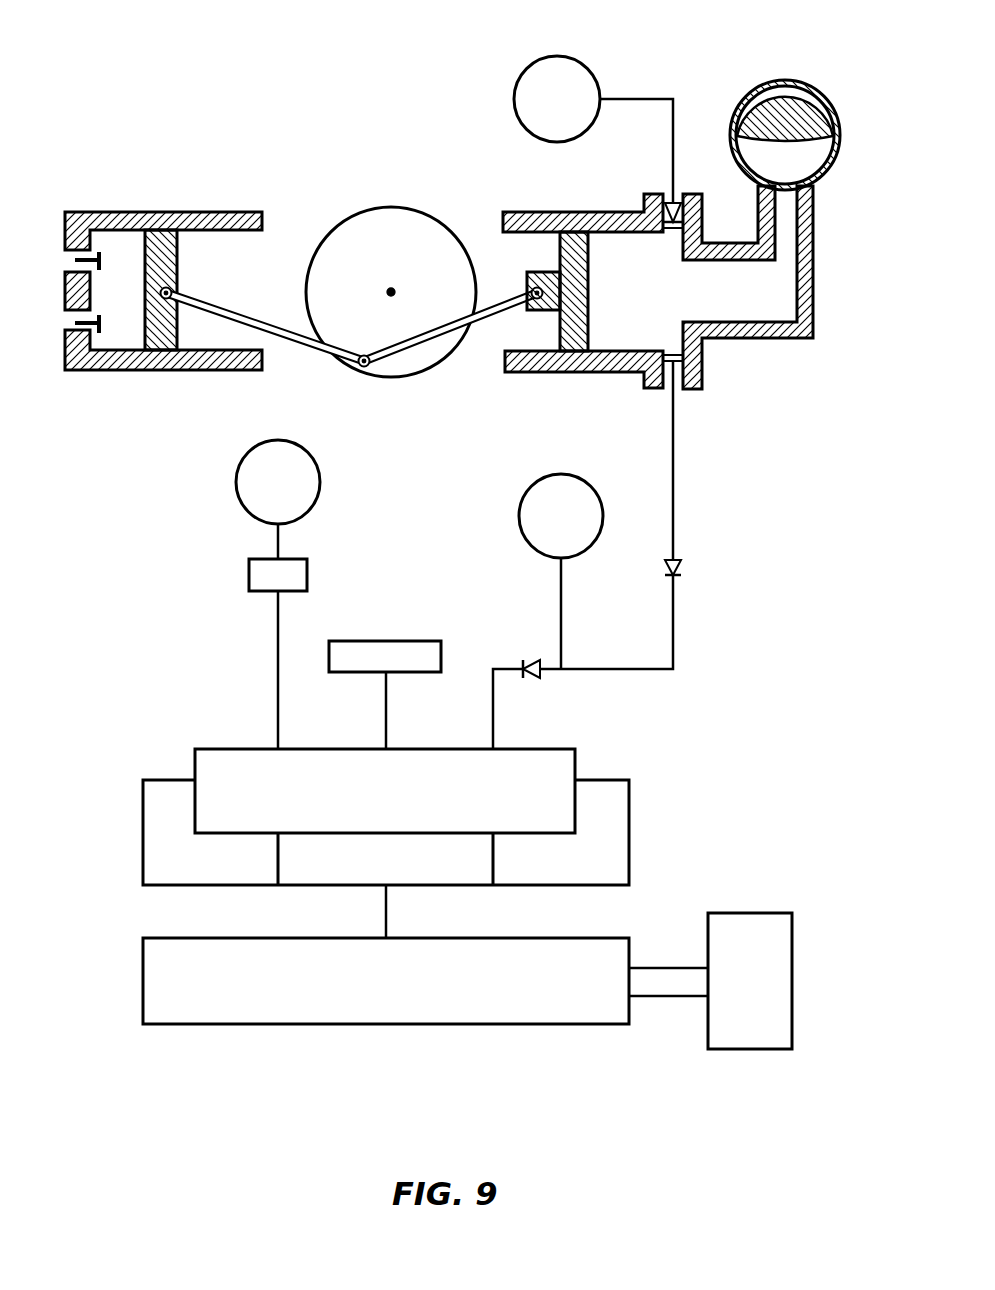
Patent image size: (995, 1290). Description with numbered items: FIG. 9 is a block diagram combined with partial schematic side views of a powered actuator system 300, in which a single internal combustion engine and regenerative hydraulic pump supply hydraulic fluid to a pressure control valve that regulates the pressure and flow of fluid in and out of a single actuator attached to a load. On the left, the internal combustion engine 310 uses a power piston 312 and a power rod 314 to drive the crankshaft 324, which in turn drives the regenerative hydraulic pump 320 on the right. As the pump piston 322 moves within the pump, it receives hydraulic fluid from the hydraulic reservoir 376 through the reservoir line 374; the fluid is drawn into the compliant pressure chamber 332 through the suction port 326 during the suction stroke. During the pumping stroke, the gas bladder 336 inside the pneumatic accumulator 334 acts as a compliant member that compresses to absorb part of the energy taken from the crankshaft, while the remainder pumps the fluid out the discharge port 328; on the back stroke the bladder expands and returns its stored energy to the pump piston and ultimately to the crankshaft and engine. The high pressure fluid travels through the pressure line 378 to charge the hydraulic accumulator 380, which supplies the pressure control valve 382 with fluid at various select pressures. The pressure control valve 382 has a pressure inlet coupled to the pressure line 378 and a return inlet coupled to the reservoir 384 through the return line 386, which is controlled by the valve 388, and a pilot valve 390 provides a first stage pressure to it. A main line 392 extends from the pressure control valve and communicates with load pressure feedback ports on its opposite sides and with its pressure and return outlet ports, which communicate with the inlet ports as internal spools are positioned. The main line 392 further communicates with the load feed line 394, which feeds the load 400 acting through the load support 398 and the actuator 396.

The powered actuator system 300 is at (152, 1074).
The internal combustion engine 310 is at (104, 184).
The power piston 312 is at (155, 322).
The power rod 314 is at (333, 350).
The regenerative hydraulic pump 320 is at (492, 196).
The pump piston 322 is at (557, 331).
The crankshaft 324 is at (354, 244).
The suction port 326 is at (681, 192).
The discharge port 328 is at (683, 391).
The compliant pressure chamber 332 is at (684, 294).
The pneumatic accumulator 334 is at (822, 88).
The gas bladder 336 is at (823, 161).
The reservoir line 374 is at (641, 97).
The hydraulic reservoir 376 is at (531, 82).
The pressure line 378 is at (674, 635).
The hydraulic accumulator 380 is at (521, 512).
The pressure control valve 382 is at (550, 760).
The reservoir 384 is at (245, 490).
The return line 386 is at (278, 652).
The valve 388 is at (249, 571).
The pilot valve 390 is at (428, 650).
The main line 392 is at (143, 836).
The load feed line 394 is at (388, 910).
The actuator 396 is at (143, 988).
The load support 398 is at (672, 986).
The load 400 is at (755, 926).